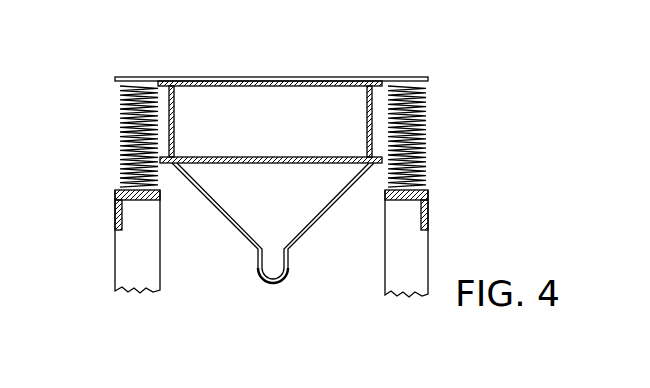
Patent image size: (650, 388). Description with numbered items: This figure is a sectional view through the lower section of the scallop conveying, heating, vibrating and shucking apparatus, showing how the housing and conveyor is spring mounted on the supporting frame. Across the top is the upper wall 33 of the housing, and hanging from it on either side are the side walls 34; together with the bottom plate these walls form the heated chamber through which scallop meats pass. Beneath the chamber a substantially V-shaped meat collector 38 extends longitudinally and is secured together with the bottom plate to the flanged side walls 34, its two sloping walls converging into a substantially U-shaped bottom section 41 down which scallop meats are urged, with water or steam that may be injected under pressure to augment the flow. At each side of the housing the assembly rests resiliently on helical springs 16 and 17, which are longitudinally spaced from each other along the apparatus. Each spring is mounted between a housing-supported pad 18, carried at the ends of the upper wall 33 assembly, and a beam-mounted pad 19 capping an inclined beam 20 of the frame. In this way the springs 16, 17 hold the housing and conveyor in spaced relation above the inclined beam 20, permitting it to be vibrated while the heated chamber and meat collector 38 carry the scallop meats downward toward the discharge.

The helical spring 16 is at (130, 98).
The helical spring 17 is at (423, 130).
The housing-supported pad 18 is at (130, 77).
The beam-mounted pad 19 is at (116, 192).
The inclined beam 20 is at (117, 222).
The upper wall 33 is at (241, 82).
The side wall 34 is at (177, 134).
The meat collector 38 is at (318, 214).
The U-shaped bottom section 41 is at (284, 277).